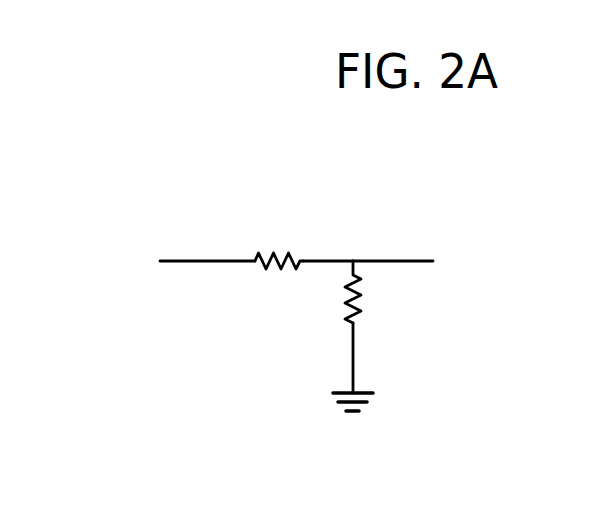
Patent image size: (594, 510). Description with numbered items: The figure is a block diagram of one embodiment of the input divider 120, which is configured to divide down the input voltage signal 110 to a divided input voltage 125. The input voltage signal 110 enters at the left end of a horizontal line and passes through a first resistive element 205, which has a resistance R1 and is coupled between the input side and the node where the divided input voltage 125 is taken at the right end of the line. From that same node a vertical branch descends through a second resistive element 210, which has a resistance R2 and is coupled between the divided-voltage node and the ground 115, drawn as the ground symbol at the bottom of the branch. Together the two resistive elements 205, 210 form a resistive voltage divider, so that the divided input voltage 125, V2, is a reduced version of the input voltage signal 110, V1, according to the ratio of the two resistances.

The input divider 120 is at (174, 101).
The input voltage signal 110 is at (190, 261).
The divided input voltage 125 is at (408, 262).
The resistive element 205 is at (280, 248).
The resistive element 210 is at (373, 302).
The ground 115 is at (382, 398).